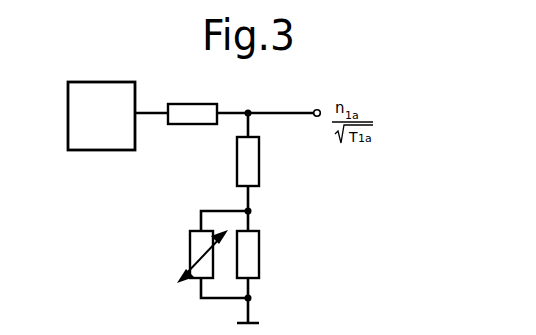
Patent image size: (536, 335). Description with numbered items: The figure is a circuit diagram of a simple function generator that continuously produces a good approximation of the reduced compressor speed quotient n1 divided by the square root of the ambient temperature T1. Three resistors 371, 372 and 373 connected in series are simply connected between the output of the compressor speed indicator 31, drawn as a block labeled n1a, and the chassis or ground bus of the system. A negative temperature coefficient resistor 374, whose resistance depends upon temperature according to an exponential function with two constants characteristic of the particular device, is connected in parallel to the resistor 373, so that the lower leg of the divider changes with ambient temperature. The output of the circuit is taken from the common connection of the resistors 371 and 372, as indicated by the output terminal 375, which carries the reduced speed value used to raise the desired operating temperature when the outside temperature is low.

The compressor speed indicator 31 is at (103, 87).
The resistor 371 is at (183, 112).
The resistor 372 is at (259, 158).
The resistor 373 is at (259, 248).
The negative temperature coefficient (NTC) resistor 374 is at (190, 251).
The output terminal 375 is at (314, 109).